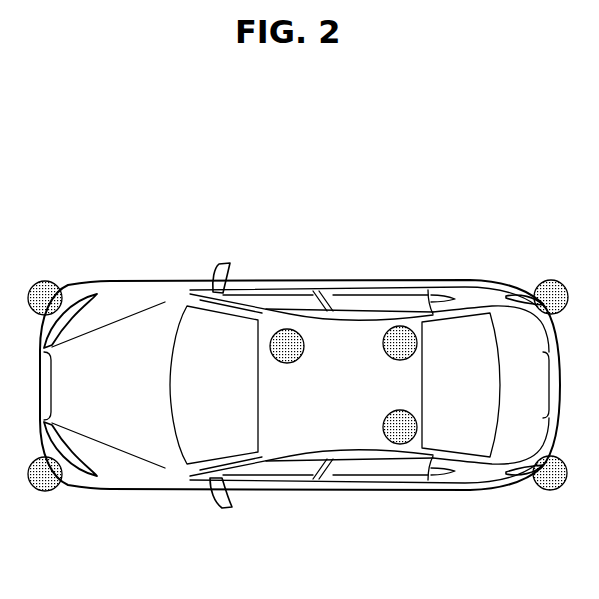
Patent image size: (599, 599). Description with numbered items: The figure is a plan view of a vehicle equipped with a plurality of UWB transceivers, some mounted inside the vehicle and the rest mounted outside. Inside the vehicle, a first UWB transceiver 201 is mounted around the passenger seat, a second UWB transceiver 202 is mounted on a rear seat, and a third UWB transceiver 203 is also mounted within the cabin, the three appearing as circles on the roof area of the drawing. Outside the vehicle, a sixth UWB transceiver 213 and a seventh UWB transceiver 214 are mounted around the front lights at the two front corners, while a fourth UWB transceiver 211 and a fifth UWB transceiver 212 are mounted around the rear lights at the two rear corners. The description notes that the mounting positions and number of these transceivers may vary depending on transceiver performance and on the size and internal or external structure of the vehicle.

The first UWB transceiver 201 is at (287, 346).
The second UWB transceiver 202 is at (400, 343).
The third UWB transceiver 203 is at (400, 427).
The fourth UWB transceiver 211 is at (551, 297).
The fifth UWB transceiver 212 is at (548, 473).
The sixth UWB transceiver 213 is at (45, 474).
The seventh UWB transceiver 214 is at (45, 298).